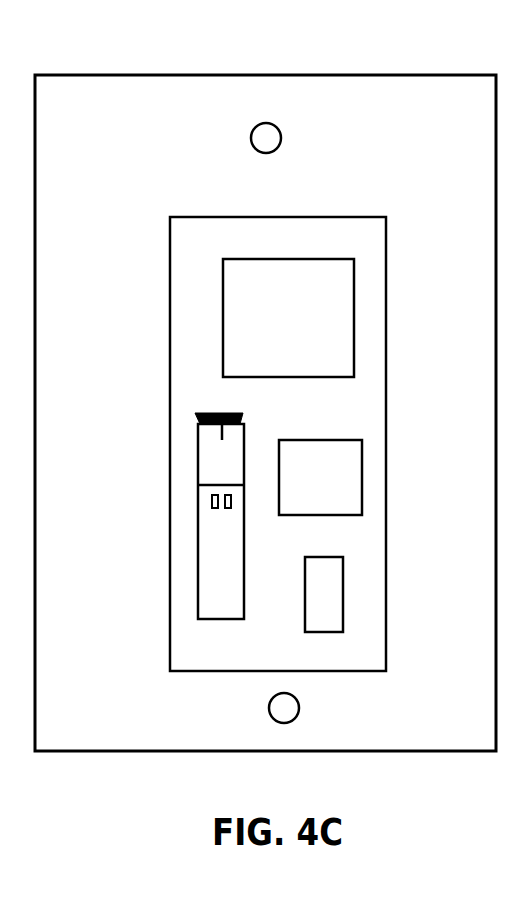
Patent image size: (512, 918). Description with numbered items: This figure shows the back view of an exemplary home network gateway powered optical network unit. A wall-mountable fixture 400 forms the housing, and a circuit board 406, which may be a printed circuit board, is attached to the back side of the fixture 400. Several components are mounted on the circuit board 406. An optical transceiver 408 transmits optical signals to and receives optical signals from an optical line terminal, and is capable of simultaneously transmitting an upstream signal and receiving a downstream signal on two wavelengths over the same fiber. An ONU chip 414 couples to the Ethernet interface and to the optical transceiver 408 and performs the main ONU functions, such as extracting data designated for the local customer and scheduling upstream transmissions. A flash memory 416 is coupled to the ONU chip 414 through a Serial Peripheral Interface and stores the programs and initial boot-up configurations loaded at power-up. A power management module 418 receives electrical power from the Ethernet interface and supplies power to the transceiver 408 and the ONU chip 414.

The wall-mountable fixture 400 is at (82, 75).
The circuit board 406 is at (300, 217).
The optical transceiver 408 is at (198, 513).
The ONU chip 414 is at (362, 477).
The flash memory 416 is at (343, 595).
The power management module 418 is at (354, 318).